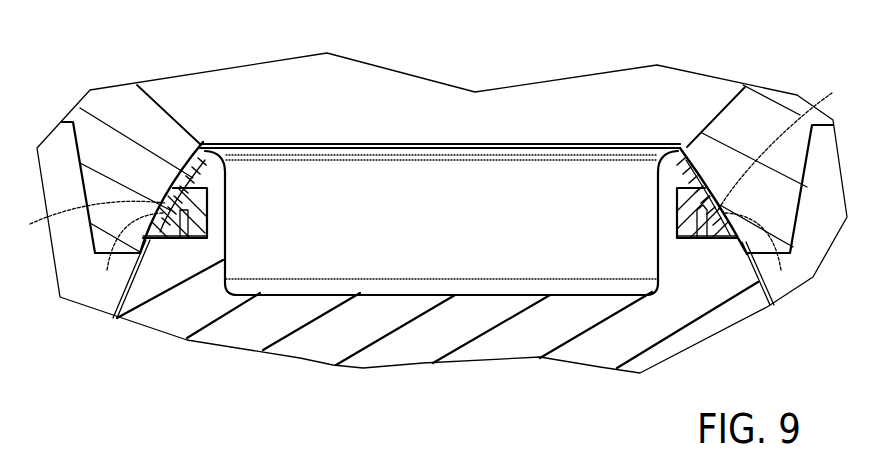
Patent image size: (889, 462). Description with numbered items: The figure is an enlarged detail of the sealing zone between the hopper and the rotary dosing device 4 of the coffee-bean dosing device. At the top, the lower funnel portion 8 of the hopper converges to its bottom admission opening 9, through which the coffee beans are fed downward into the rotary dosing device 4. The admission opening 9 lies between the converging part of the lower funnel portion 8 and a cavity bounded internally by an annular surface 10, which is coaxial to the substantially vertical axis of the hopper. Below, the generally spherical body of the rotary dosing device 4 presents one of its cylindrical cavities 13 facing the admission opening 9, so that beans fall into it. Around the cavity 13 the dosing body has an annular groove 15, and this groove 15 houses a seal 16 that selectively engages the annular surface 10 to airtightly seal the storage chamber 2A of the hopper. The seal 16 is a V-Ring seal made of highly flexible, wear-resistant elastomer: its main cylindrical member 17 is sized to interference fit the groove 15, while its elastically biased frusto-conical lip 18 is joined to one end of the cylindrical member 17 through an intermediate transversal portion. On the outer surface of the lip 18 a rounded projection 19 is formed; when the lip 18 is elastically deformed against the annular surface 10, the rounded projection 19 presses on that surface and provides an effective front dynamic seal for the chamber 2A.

The storage chamber 2A is at (296, 99).
The rotary dosing device 4 is at (405, 357).
The lower funnel portion 8 is at (748, 130).
The admission opening 9 is at (676, 144).
The annular surface 10 is at (206, 178).
The cylindrical cavity 13 is at (244, 191).
The annular groove 15 is at (178, 222).
The seal 16 is at (220, 225).
The main cylindrical member 17 is at (193, 240).
The conical lip 18 is at (147, 215).
The rounded projection 19 is at (107, 270).